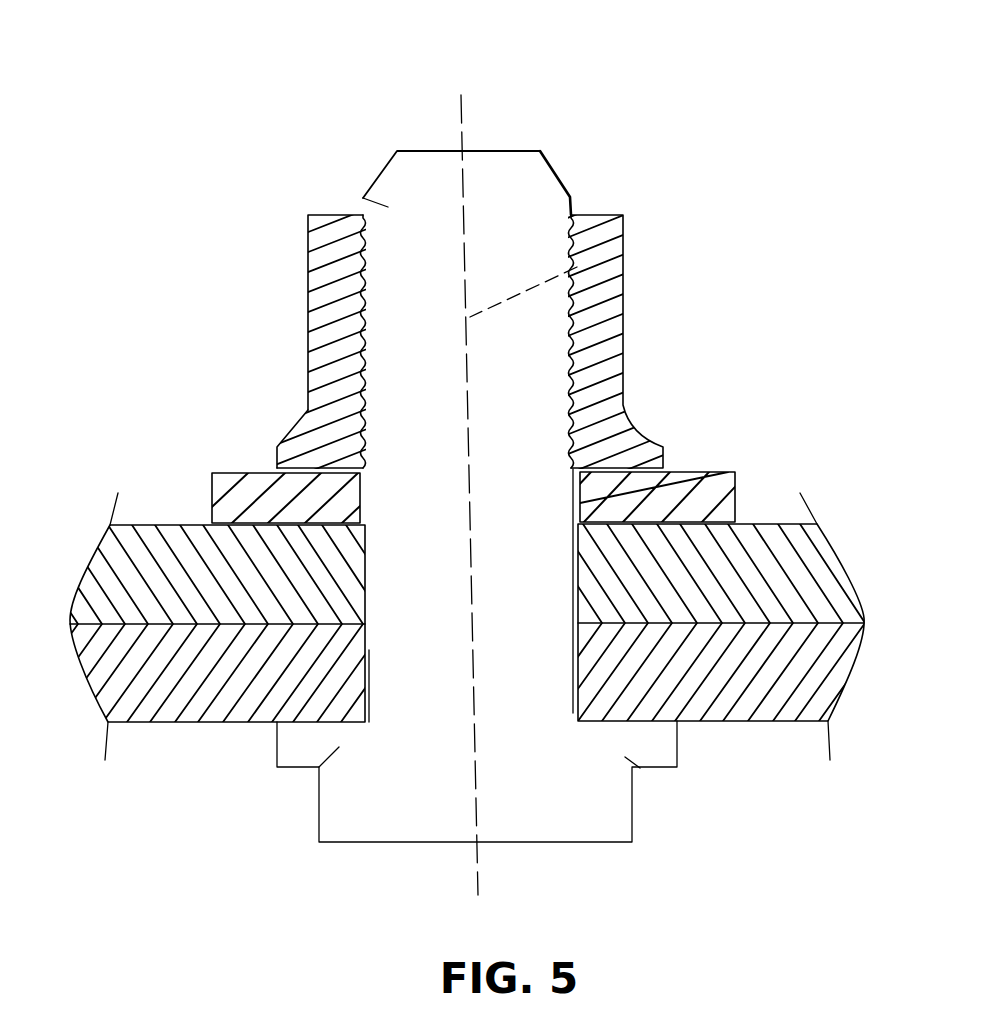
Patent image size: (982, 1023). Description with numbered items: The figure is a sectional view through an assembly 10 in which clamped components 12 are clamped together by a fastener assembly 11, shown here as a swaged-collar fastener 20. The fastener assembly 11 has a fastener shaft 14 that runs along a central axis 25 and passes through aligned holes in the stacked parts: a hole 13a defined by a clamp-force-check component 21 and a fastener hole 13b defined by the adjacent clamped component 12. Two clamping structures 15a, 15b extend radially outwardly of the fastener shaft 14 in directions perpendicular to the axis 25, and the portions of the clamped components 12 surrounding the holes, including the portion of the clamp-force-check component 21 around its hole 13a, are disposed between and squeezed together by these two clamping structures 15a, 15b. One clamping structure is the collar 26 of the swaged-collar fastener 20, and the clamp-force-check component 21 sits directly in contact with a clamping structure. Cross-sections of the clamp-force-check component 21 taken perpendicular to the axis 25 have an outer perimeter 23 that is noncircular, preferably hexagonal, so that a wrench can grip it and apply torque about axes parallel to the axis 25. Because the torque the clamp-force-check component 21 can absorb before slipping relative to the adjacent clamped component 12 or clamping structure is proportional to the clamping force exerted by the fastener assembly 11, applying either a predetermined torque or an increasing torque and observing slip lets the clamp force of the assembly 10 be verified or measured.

The assembly 10 is at (675, 314).
The fastener assembly 11 is at (540, 178).
The clamped components 12 is at (163, 525).
The hole 13a is at (660, 443).
The fastener hole 13b is at (578, 592).
The fastener shaft 14 is at (380, 338).
The clamping structure 15a is at (320, 448).
The clamping structure 15b is at (320, 768).
The swaged-collar fastener 20 is at (353, 242).
The clamp-force-check component 21 is at (737, 505).
The outer perimeter 23 is at (211, 497).
The axis 25 is at (577, 267).
The collar 26 is at (608, 350).